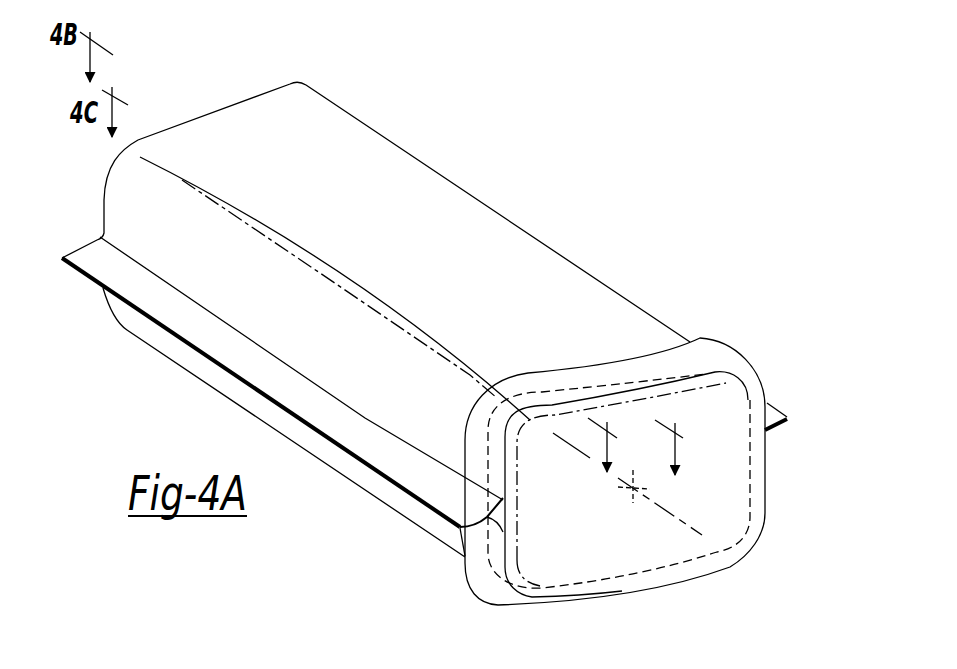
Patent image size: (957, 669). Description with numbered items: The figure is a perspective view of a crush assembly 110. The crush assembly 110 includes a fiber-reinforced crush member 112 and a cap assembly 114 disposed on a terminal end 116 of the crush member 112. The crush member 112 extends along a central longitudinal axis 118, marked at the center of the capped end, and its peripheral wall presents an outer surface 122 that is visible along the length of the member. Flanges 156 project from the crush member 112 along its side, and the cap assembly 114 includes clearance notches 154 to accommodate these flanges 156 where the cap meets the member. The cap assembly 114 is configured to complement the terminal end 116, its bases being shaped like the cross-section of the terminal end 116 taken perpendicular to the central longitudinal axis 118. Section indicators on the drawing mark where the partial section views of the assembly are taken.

The crush assembly 110 is at (603, 110).
The crush member 112 is at (437, 166).
The cap assembly 114 is at (748, 342).
The terminal end 116 is at (432, 565).
The central longitudinal axis 118 is at (673, 516).
The outer surface 122 is at (510, 253).
The clearance notches 154 is at (485, 520).
The flanges 156 is at (88, 262).